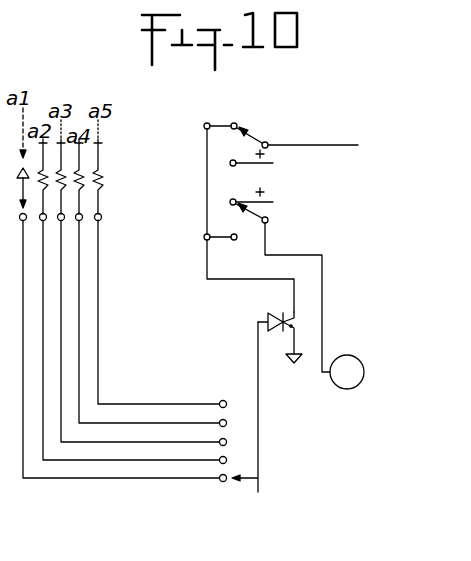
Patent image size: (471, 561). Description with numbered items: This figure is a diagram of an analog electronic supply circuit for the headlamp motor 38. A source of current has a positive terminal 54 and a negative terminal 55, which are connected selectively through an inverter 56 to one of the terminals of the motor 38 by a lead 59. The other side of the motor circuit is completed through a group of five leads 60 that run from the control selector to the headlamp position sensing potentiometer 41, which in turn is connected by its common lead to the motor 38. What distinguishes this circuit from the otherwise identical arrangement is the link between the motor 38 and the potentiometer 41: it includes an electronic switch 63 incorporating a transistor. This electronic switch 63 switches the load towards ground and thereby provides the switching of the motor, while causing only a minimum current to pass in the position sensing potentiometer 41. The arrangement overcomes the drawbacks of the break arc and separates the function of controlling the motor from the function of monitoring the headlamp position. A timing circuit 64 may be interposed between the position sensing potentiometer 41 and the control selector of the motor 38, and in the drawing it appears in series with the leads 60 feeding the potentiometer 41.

The motor 38 is at (347, 389).
The headlamp position sensing potentiometer 41 is at (222, 482).
The positive terminal 54 is at (280, 261).
The negative terminal 55 is at (293, 363).
The inverter 56 is at (216, 121).
The lead 59 is at (102, 216).
The leads 60 is at (100, 337).
The electronic switch 63 is at (280, 312).
The timing circuit 64 is at (104, 183).